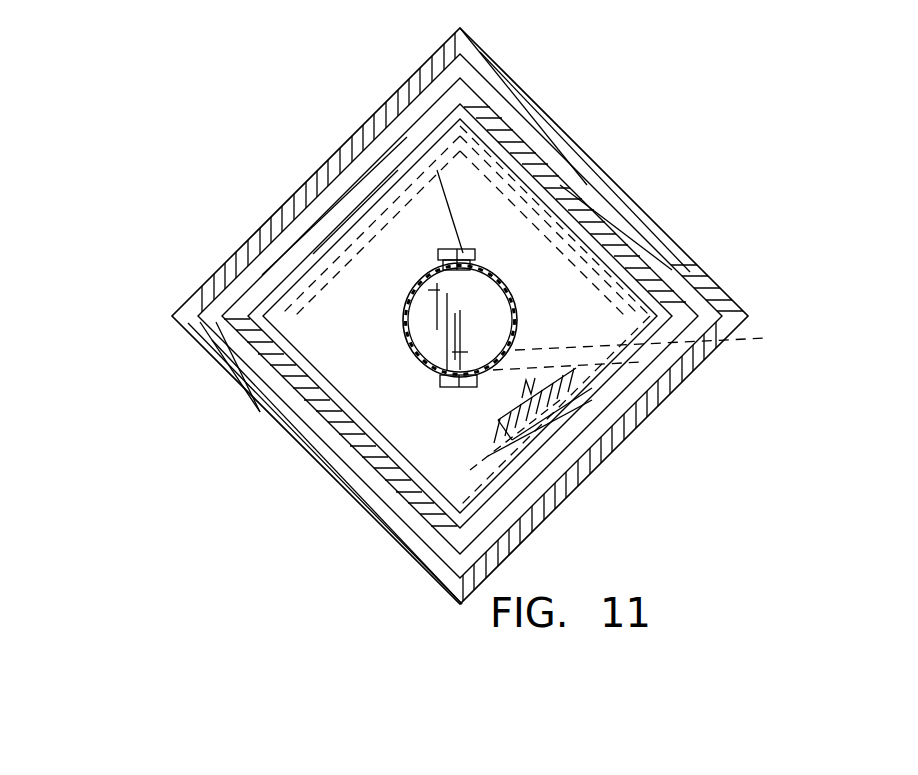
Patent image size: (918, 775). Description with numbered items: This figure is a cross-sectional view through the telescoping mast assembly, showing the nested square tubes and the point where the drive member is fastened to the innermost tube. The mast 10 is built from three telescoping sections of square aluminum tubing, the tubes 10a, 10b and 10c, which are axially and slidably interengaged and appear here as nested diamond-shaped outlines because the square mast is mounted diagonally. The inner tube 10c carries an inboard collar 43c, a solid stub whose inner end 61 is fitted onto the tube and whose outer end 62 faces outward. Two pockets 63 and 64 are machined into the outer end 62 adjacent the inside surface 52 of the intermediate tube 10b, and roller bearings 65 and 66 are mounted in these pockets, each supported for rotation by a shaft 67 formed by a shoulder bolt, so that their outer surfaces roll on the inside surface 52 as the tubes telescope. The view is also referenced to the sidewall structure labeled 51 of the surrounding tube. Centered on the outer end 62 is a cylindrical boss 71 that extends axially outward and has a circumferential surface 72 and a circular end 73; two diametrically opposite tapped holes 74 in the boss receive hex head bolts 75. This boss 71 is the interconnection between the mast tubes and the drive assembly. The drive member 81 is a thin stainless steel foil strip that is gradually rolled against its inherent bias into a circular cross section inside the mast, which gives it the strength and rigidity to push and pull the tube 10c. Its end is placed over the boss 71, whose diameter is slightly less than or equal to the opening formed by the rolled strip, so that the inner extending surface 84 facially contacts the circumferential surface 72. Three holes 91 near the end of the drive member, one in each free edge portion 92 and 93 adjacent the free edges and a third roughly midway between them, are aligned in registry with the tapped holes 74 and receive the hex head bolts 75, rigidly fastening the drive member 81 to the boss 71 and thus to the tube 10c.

The mast 10 is at (235, 116).
The tube 10a is at (633, 422).
The tube 10b is at (648, 365).
The tube 10c is at (612, 447).
The inboard collar 43c is at (467, 143).
The strip 51 is at (673, 263).
The inside surface 52 is at (662, 272).
The inner end 61 is at (597, 470).
The outer end 62 is at (547, 507).
The pocket 63 is at (354, 132).
The pocket 64 is at (585, 160).
The roller bearing 65 is at (355, 208).
The roller bearing 66 is at (552, 203).
The shaft 67 is at (290, 243).
The cylindrical boss 71 is at (404, 332).
The circumferential surface 72 is at (440, 353).
The circular end 73 is at (450, 363).
The tapped hole 74 is at (237, 347).
The hex head bolt 75 is at (437, 170).
The drive member 81 is at (400, 356).
The inner extending surface 84 is at (518, 322).
The hole 91 is at (432, 268).
The free edge portion 92 is at (440, 259).
The free edge portion 93 is at (476, 258).